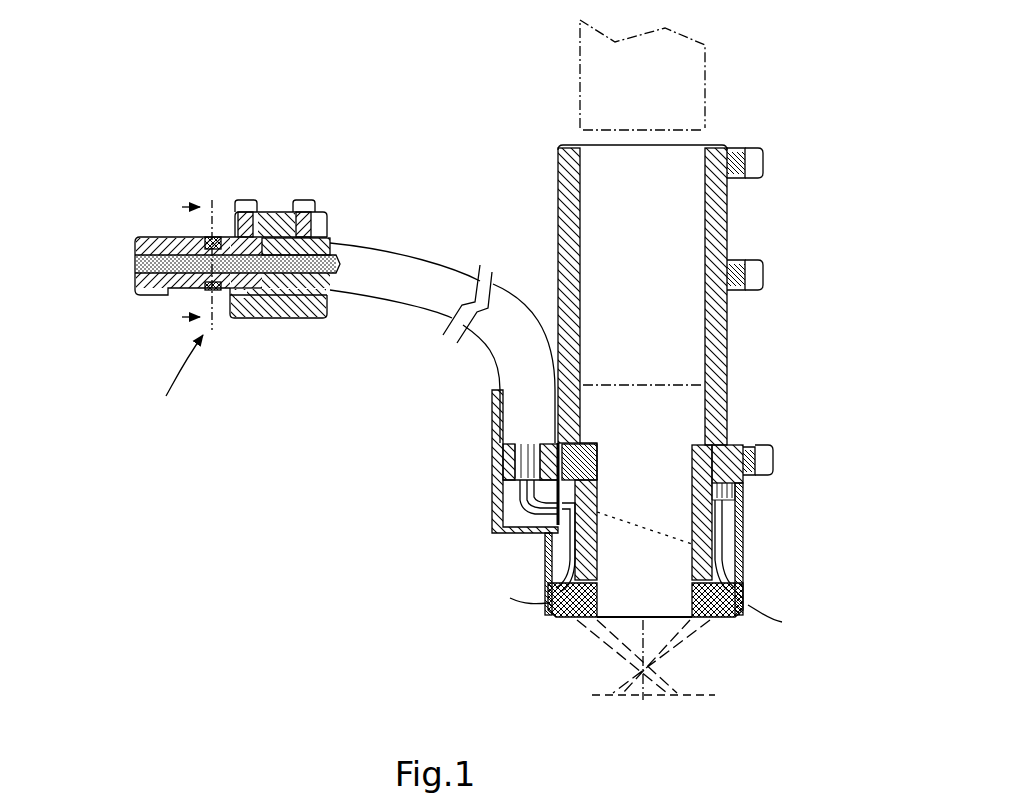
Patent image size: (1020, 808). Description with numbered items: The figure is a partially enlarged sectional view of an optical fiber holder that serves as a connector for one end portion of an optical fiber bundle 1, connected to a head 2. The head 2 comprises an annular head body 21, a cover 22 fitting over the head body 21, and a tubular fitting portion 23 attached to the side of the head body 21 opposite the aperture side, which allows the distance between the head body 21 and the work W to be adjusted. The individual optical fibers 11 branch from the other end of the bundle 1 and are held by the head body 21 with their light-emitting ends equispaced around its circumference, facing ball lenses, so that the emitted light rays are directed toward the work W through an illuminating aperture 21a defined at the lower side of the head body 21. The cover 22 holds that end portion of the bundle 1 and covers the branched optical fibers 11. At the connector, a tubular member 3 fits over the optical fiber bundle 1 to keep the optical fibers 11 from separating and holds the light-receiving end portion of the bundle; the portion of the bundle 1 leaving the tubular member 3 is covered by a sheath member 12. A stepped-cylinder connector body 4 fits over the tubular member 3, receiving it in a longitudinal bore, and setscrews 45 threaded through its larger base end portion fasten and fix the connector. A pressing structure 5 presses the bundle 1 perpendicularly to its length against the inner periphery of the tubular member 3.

The optical fiber bundle 1 is at (259, 312).
The head 2 is at (720, 272).
The tubular member 3 is at (130, 247).
The connector body 4 is at (284, 324).
The pressing structure 5 is at (212, 236).
The optical fibers 11 is at (330, 310).
The sheath member 12 is at (333, 238).
The head body 21 is at (679, 553).
The illuminating aperture 21a is at (560, 620).
The cover 22 is at (492, 453).
The fitting portion 23 is at (727, 228).
The setscrews 45 is at (255, 200).
The work W is at (655, 695).